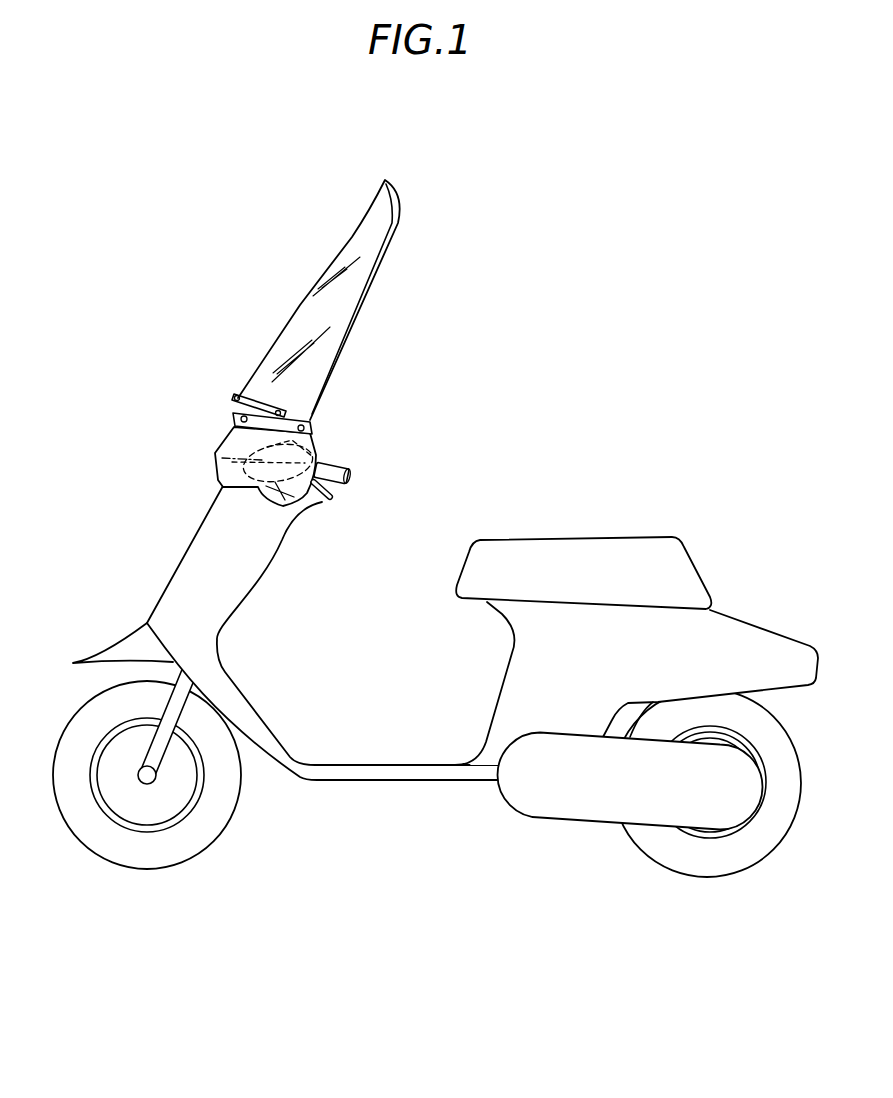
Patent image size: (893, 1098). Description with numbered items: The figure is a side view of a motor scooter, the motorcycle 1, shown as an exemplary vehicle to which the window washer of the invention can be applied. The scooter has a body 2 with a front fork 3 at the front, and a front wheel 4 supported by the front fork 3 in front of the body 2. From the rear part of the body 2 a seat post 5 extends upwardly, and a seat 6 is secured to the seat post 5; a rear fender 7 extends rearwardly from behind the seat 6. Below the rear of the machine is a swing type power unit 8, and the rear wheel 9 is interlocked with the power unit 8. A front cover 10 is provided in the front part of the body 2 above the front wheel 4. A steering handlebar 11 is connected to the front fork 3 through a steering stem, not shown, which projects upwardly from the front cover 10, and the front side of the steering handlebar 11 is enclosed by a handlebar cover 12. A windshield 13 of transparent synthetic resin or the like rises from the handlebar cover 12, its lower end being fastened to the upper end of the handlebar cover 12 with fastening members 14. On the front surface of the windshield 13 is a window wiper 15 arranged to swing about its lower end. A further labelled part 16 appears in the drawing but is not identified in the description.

The motorcycle 1 is at (268, 690).
The body 2 is at (345, 772).
The front fork 3 is at (173, 710).
The front wheel 4 is at (193, 832).
The seat post 5 is at (533, 642).
The seat 6 is at (573, 560).
The rear fender 7 is at (733, 642).
The swing type power unit 8 is at (560, 807).
The rear wheel 9 is at (687, 858).
The front cover 10 is at (198, 542).
The steering handlebar 11 is at (333, 470).
The handlebar cover 12 is at (307, 500).
The windshield 13 is at (320, 307).
The fastening members 14 is at (268, 428).
The window wiper 15 is at (268, 402).
The windshield edge rim 16 is at (356, 309).